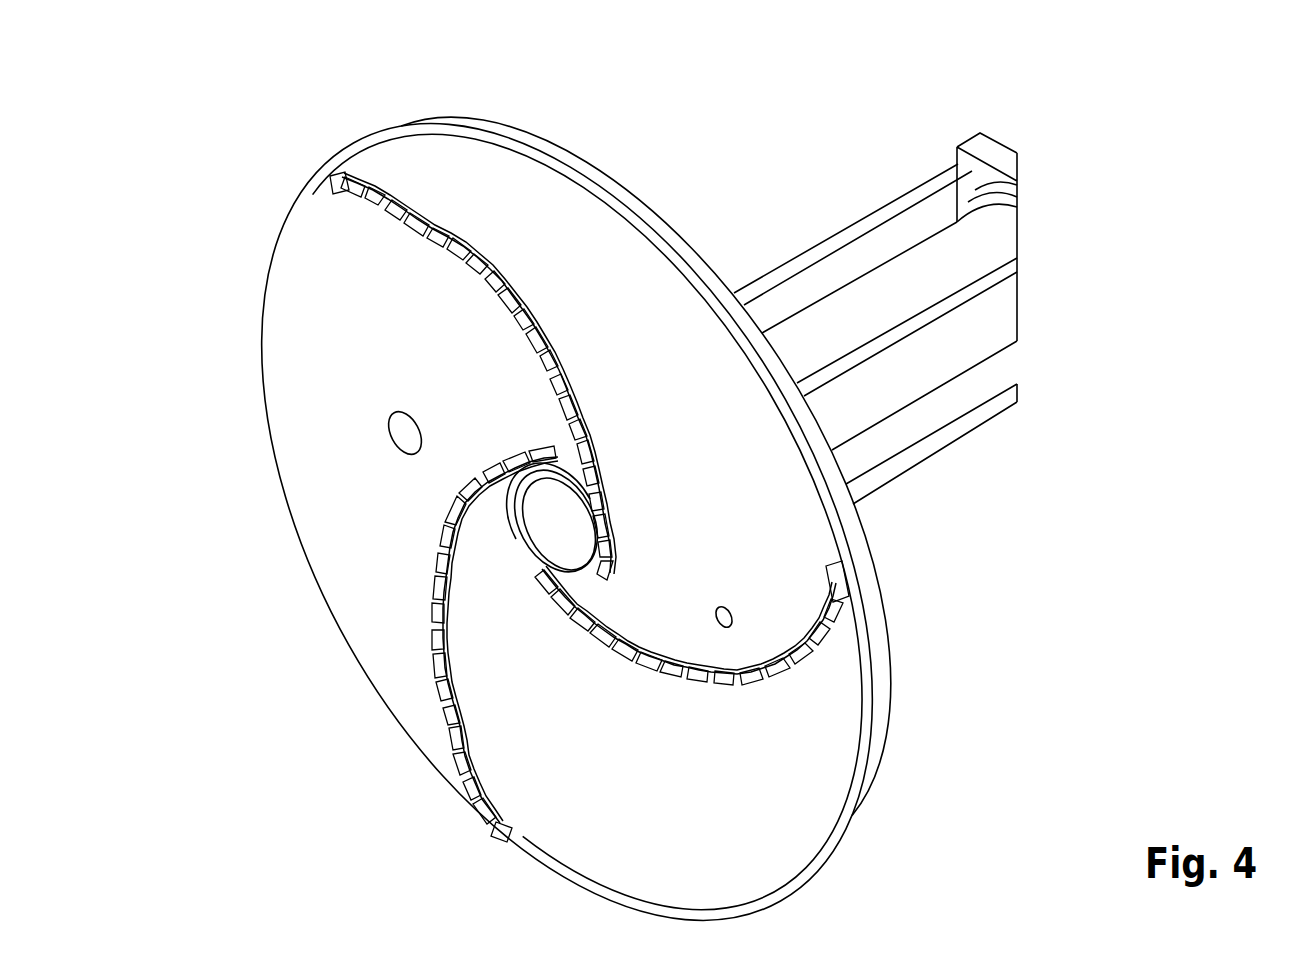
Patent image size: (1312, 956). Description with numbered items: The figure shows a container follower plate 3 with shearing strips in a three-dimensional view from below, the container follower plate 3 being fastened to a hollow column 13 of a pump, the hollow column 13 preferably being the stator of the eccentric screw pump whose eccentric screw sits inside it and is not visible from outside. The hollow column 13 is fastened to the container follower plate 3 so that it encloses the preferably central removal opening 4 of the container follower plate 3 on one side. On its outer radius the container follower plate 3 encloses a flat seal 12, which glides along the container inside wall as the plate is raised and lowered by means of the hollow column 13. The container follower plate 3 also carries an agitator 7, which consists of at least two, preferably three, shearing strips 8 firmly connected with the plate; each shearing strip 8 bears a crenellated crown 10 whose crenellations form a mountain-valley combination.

The container follower plate 3 is at (820, 820).
The removal opening 4 is at (560, 524).
The agitator 7 is at (594, 418).
The shearing strips 8 is at (620, 479).
The crenellated crown 10 is at (407, 219).
The flat seal 12 is at (873, 777).
The hollow column 13 is at (918, 354).